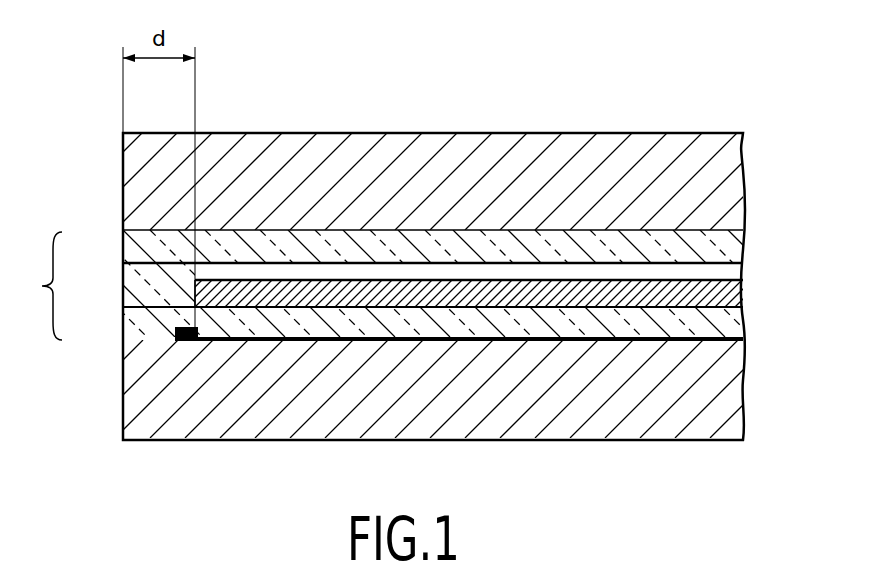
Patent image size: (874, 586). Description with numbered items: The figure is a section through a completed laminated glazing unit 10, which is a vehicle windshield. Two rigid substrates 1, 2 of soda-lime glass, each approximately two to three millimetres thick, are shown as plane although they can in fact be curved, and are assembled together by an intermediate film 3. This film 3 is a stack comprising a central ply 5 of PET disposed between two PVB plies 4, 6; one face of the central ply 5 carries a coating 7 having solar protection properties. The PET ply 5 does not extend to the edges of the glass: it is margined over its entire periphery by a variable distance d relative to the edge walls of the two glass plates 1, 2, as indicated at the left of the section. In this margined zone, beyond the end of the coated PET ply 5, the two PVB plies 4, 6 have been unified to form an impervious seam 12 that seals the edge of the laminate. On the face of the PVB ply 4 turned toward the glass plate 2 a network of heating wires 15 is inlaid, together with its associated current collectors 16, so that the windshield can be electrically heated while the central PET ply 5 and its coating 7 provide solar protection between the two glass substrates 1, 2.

The laminated glazing unit 10 is at (637, 116).
The rigid substrate 1 is at (718, 166).
The rigid substrate 2 is at (708, 405).
The intermediate film 3 is at (40, 286).
The PVB ply 4 is at (725, 322).
The central ply 5 is at (733, 297).
The PVB ply 6 is at (720, 240).
The coating 7 is at (725, 272).
The impervious seam 12 is at (147, 285).
The heating wires 15 is at (710, 340).
The current collectors 16 is at (180, 342).